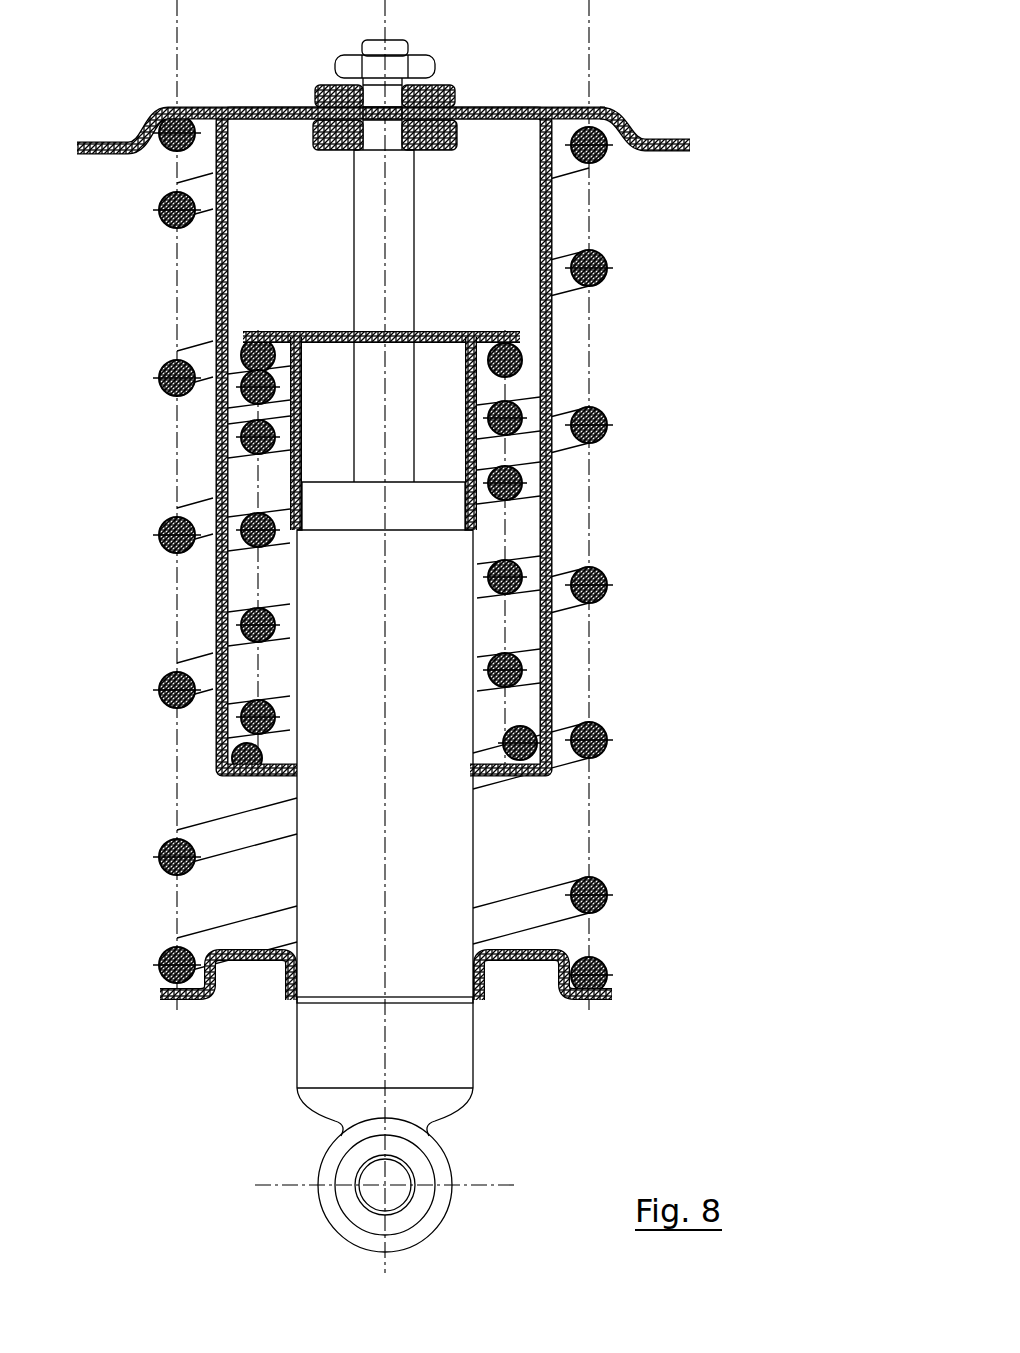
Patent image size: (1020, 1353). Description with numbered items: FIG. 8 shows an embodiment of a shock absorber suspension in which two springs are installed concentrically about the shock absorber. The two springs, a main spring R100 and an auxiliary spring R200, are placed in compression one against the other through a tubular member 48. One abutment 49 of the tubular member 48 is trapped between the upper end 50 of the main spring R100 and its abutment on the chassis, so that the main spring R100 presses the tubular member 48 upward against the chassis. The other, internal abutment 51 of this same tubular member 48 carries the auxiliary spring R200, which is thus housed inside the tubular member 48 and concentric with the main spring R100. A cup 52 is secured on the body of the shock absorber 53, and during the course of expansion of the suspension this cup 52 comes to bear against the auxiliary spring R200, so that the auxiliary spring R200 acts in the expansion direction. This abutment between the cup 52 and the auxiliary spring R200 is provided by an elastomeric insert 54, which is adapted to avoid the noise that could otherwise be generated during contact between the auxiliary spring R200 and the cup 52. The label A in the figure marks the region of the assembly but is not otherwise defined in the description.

The tubular member 48 is at (552, 222).
The abutment 49 is at (575, 110).
The upper end 50 is at (616, 132).
The internal abutment 51 is at (555, 780).
The cup 52 is at (245, 335).
The body of the shock absorber 53 is at (325, 580).
The elastomeric insert 54 is at (540, 370).
The upper mounting assembly A is at (553, 345).
The auxiliary spring R200 is at (515, 560).
The main spring R100 is at (600, 570).